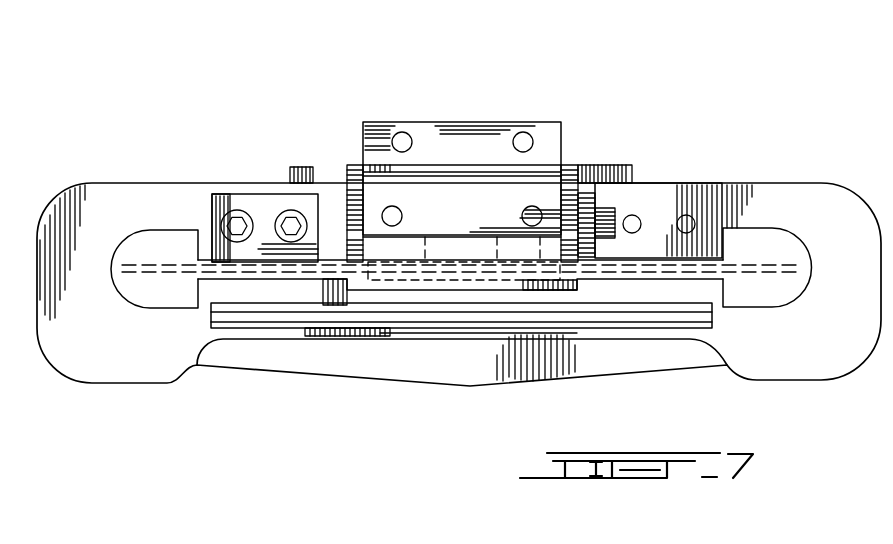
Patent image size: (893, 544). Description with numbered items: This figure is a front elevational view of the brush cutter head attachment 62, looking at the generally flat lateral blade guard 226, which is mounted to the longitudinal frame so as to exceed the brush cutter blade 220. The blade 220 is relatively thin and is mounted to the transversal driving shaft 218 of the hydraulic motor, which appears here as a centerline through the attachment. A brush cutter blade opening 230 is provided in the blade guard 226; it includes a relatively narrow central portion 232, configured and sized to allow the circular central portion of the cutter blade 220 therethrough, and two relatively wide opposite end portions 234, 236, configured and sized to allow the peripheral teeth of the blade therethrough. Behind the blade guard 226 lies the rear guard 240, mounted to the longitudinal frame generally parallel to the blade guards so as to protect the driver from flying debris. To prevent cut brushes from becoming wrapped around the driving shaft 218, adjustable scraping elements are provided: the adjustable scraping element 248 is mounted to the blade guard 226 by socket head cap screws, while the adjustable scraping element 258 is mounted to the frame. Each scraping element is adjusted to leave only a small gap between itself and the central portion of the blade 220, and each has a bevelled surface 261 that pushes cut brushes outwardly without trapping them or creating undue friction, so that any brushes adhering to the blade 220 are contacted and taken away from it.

The brush cutter head attachment 62 is at (157, 100).
The driving shaft 218 is at (483, 243).
The brush cutter blade 220 is at (259, 278).
The blade guard 226 is at (130, 362).
The brush cutter blade opening 230 is at (665, 278).
The central portion 232 is at (617, 273).
The end portion 234 is at (147, 240).
The end portion 236 is at (312, 338).
The rear guard 240 is at (378, 363).
The adjustable scraping element 248 is at (255, 205).
The adjustable scraping element 258 is at (613, 210).
The bevelled surface 261 is at (213, 197).